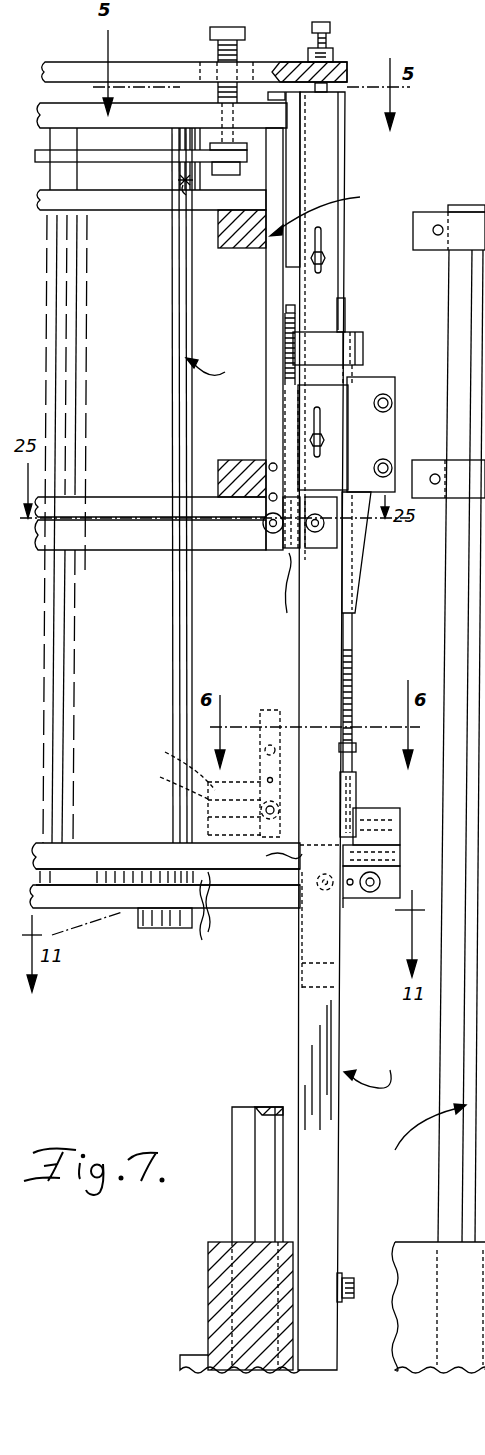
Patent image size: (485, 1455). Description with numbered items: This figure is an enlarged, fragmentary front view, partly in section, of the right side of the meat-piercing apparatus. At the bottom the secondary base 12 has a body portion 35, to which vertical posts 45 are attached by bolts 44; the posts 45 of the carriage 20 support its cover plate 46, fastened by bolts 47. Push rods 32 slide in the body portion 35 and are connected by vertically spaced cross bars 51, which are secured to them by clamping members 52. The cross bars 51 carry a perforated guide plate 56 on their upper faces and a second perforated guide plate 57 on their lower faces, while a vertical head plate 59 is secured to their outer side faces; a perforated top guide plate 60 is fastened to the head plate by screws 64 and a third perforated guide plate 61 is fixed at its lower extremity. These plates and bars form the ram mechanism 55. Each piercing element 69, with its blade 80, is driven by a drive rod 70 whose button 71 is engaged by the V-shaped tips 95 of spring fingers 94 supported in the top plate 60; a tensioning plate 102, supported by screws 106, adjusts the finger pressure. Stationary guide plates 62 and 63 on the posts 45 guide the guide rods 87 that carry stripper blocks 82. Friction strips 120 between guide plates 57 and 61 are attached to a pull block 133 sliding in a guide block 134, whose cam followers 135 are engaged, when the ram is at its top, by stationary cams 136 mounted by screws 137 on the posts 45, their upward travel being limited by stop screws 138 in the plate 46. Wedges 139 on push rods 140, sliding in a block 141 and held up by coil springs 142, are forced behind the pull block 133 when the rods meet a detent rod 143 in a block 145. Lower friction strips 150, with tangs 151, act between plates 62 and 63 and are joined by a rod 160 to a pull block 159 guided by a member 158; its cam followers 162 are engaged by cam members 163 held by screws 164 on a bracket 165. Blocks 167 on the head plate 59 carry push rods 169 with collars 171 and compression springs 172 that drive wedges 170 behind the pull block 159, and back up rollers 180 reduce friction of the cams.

The cover plate 46 is at (80, 62).
The perforated top guide plate 60 is at (40, 110).
The drive rod 70 is at (188, 88).
The screws 106 is at (246, 8).
The screws 64 is at (268, 94).
The stop screws 138 is at (340, 20).
The bolts 47 is at (334, 58).
The piercing element 69 is at (206, 375).
The tensioning plate 102 is at (88, 160).
The spring fingers 94 is at (176, 145).
The V-shaped tips 95 is at (176, 180).
The perforated guide plate 56 is at (102, 203).
The button 71 is at (182, 187).
The cross bars 51 is at (240, 246).
The head plate 59 is at (266, 293).
The block 145 is at (292, 151).
The posts 45 is at (300, 1050).
The ram mechanism 55 is at (327, 208).
The screws 137 is at (325, 260).
The clamping members 52 is at (428, 212).
The vertical rod 143 is at (288, 306).
The coil springs 142 is at (284, 332).
The blocks 167 is at (362, 346).
The bracket 165 is at (392, 392).
The screws 164 is at (393, 470).
The block 141 is at (288, 418).
The vertical push rod 140 is at (288, 438).
The wedges 139 is at (284, 464).
The second perforated guide plate 57 is at (100, 500).
The friction strips 120 is at (156, 527).
The third perforated guide plate 61 is at (100, 546).
The back up rollers 180 is at (270, 536).
The pull block 133 is at (332, 524).
The cam followers 135 is at (335, 544).
The stationary cams 136 is at (271, 599).
The cam members 163 is at (358, 600).
The coiled compression spring 172 is at (392, 672).
The adjustable collar 171 is at (356, 750).
The push rods 169 is at (356, 790).
The member 158 is at (384, 828).
The pull block 159 is at (390, 896).
The cam followers 162 is at (374, 898).
The rod 160 is at (354, 897).
The guide rods 87 is at (172, 664).
The blades 80 is at (174, 720).
The guide plate 63 is at (112, 842).
The guide plate 62 is at (90, 864).
The wedges 170 is at (261, 860).
The friction strips 150 is at (138, 900).
The stripper blocks 82 is at (180, 928).
The tangs 151 is at (204, 920).
The carriage 20 is at (405, 1110).
The guide block 134 is at (448, 479).
The push rods 32 is at (234, 1110).
The body portion 35 is at (208, 1270).
The secondary base 12 is at (170, 1346).
The bolts 44 is at (358, 1298).